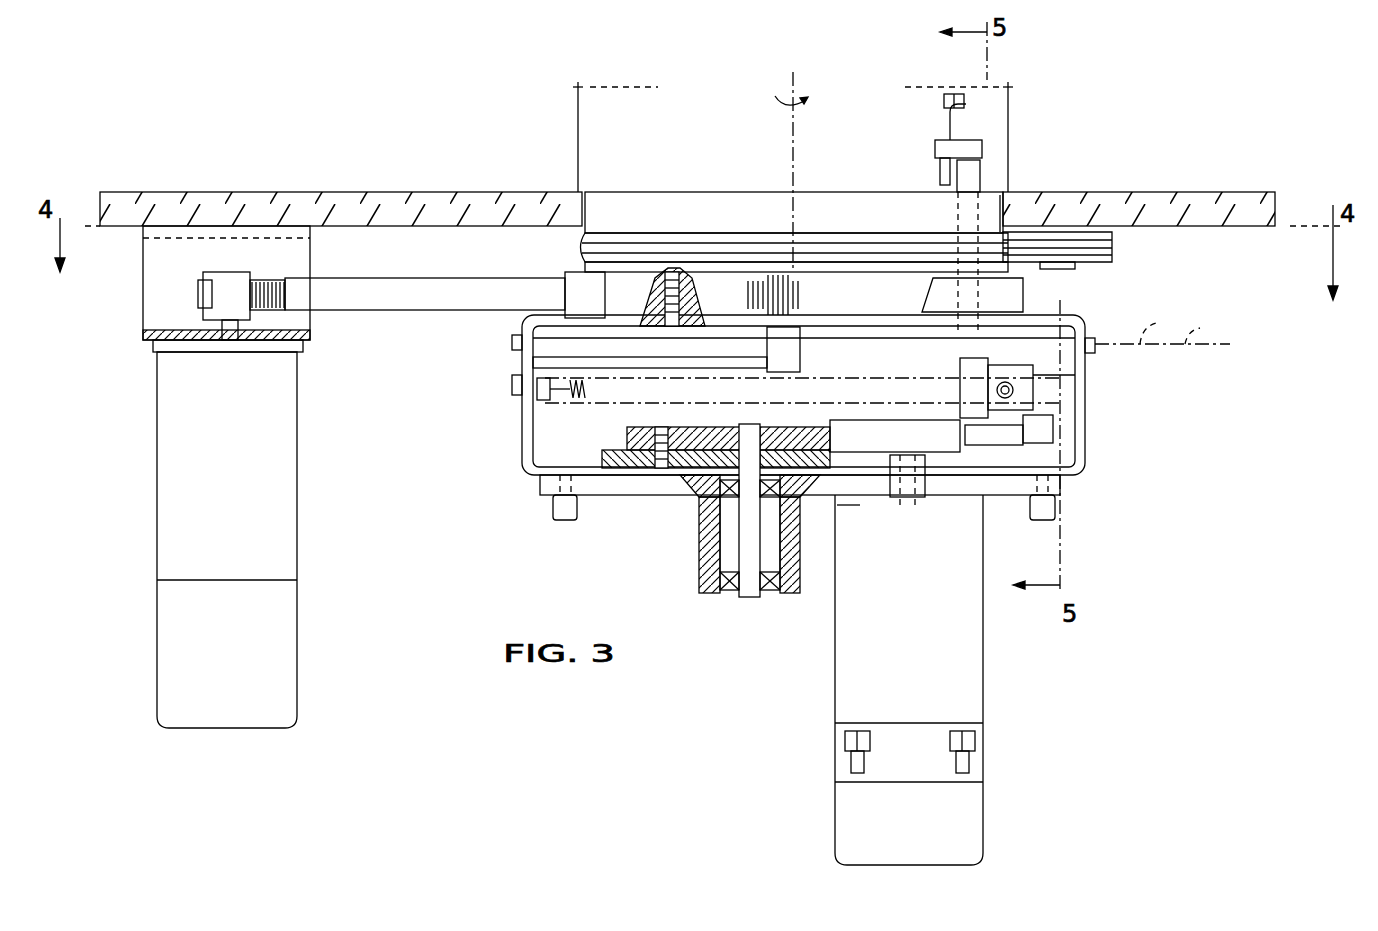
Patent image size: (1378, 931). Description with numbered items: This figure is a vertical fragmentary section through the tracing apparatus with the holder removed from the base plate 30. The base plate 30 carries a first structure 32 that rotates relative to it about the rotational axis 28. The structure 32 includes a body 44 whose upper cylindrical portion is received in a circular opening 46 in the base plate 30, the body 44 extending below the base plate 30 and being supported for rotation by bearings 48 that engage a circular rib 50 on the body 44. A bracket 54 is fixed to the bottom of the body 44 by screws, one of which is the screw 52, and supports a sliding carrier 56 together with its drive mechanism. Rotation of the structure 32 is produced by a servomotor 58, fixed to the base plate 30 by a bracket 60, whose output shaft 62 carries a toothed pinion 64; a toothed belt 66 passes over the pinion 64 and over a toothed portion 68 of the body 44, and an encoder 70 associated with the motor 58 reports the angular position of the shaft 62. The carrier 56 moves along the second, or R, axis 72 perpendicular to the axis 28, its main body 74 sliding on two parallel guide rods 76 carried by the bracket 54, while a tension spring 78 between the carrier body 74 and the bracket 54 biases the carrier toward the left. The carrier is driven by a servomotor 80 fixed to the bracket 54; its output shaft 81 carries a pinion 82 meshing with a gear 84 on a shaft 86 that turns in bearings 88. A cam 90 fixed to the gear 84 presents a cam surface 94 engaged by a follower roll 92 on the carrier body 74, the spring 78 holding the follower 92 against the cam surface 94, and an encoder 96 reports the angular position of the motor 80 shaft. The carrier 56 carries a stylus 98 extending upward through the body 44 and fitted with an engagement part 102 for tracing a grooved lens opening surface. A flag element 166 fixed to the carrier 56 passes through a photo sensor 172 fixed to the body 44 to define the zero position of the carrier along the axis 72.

The rotational axis 28 is at (797, 160).
The base plate 30 is at (1105, 192).
The first structure 32 is at (622, 206).
The body 44 is at (697, 206).
The circular opening 46 is at (1000, 195).
The bearings 48 is at (1100, 258).
The circular rib 50 is at (578, 250).
The screw 52 is at (652, 290).
The bracket 54 is at (1082, 465).
The sliding carrier 56 is at (1035, 375).
The servomotor 58 is at (288, 490).
The bracket 60 is at (150, 250).
The output shaft 62 is at (215, 330).
The toothed pinion 64 is at (230, 275).
The toothed belt 66 is at (440, 290).
The toothed portion 68 is at (578, 268).
The encoder 70 is at (280, 652).
The second axis 72 is at (1162, 325).
The main body 74 is at (1035, 398).
The guide rods 76 is at (528, 318).
The tension spring 78 is at (568, 400).
The servomotor 80 is at (850, 600).
The output shaft 81 is at (915, 497).
The pinion 82 is at (926, 470).
The gear 84 is at (615, 455).
The shaft 86 is at (740, 530).
The bearings 88 is at (700, 500).
The cam 90 is at (628, 430).
The follower roll 92 is at (1057, 432).
The cam surface 94 is at (860, 440).
The encoder 96 is at (970, 820).
The stylus 98 is at (982, 175).
The engagement part 102 is at (950, 112).
The flag element 166 is at (958, 390).
The photo sensor 172 is at (775, 370).